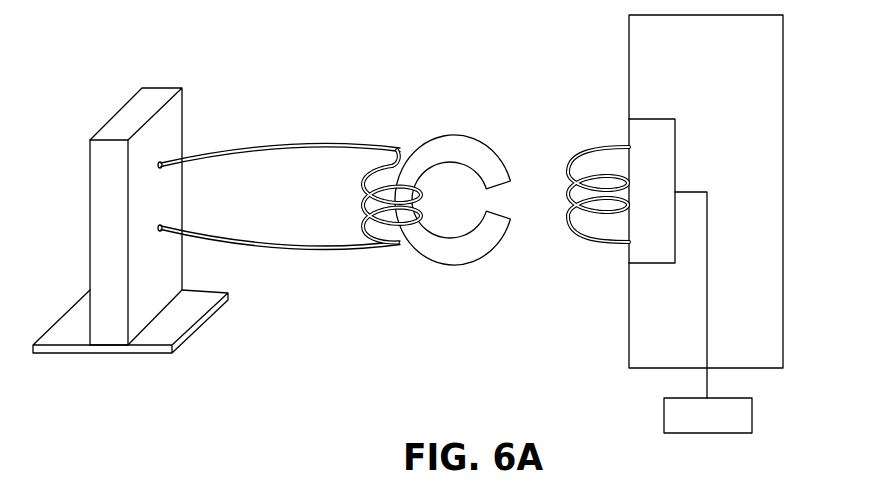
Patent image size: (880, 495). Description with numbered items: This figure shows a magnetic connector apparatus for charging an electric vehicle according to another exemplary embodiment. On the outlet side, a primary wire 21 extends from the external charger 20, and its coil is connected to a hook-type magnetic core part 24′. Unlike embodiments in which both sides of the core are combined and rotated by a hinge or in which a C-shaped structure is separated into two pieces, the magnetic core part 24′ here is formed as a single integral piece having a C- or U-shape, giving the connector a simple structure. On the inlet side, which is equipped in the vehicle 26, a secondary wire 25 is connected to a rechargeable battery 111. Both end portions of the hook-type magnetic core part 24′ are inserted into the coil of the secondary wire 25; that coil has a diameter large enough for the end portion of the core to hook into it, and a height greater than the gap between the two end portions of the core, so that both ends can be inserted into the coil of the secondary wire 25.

The external charger 20 is at (90, 260).
The primary wire 21 is at (248, 137).
The hook-type magnetic core part 24′ is at (438, 150).
The secondary wire 25 is at (600, 143).
The vehicle 26 is at (642, 343).
The rechargeable battery 111 is at (753, 417).